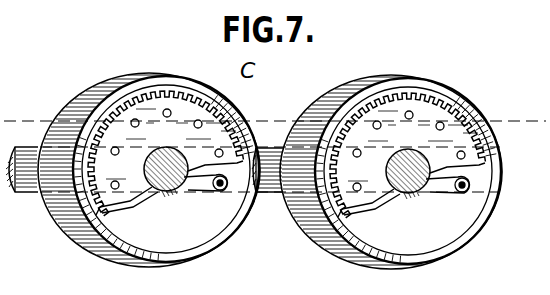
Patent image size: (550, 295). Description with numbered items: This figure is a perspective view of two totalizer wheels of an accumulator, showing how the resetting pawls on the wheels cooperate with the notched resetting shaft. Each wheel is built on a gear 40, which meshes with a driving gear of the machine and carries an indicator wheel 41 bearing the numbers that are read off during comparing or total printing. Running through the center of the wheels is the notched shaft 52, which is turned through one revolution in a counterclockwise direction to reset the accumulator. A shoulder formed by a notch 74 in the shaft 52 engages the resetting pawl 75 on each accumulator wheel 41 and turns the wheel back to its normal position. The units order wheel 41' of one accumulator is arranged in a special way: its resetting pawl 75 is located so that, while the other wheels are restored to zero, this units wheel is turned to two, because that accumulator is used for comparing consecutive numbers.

The gear 40 is at (292, 135).
The indicator wheel 41 is at (142, 169).
The units order wheel 41' is at (386, 171).
The notched shaft 52 is at (238, 151).
The notch 74 is at (271, 170).
The resetting pawl 75 is at (290, 215).